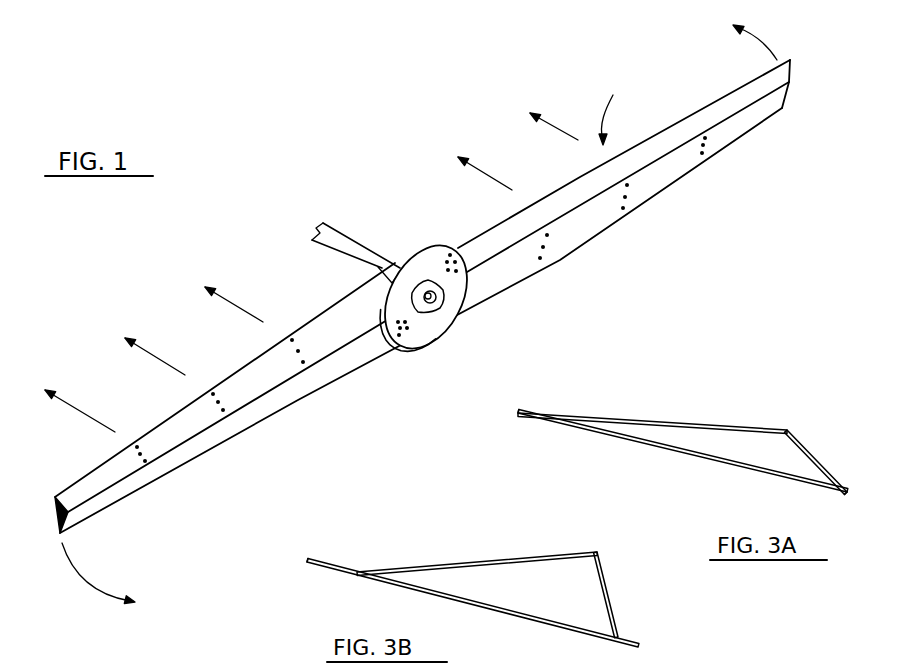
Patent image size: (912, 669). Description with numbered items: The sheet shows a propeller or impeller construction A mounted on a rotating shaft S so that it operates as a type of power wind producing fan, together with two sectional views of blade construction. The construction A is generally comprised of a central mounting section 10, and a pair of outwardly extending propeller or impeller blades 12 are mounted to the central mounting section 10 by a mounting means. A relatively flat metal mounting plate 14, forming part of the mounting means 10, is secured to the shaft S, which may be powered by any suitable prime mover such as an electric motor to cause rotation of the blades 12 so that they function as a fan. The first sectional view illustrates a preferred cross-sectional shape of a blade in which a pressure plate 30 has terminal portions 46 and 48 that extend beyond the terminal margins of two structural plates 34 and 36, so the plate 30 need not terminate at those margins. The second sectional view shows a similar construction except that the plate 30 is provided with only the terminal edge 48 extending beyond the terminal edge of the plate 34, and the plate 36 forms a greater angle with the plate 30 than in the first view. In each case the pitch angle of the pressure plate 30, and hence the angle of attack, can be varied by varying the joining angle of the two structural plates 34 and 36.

In FIG. 1, the central mounting section 10 is at (445, 336).
In FIG. 1, the propeller or impeller blades 12 is at (180, 417).
In FIG. 1, the mounting plate 14 is at (428, 262).
In FIG. 1, the rotating shaft S is at (443, 293).
In FIG. 1, the propeller or impeller construction A is at (608, 104).
In FIG. 3A, the pressure plate 30 is at (701, 461).
In FIG. 3B, the pressure plate 30 is at (490, 613).
In FIG. 3A, the structural plate 34 is at (663, 423).
In FIG. 3B, the structural plate 34 is at (470, 555).
In FIG. 3A, the structural plate 36 is at (810, 450).
In FIG. 3B, the structural plate 36 is at (608, 587).
In FIG. 3A, the terminal portion 46 is at (848, 497).
In FIG. 3A, the terminal portion 48 is at (518, 418).
In FIG. 3B, the terminal portion 48 is at (307, 565).